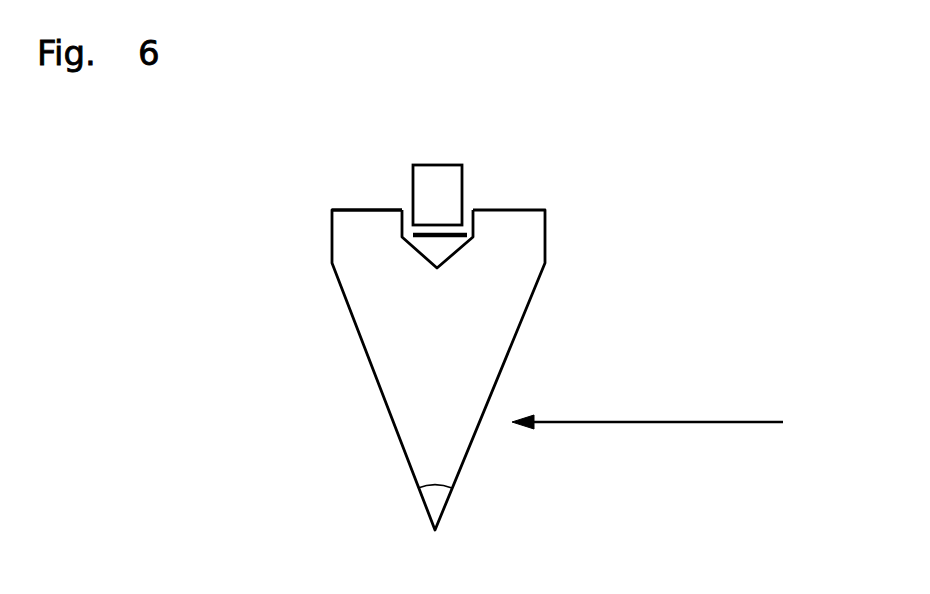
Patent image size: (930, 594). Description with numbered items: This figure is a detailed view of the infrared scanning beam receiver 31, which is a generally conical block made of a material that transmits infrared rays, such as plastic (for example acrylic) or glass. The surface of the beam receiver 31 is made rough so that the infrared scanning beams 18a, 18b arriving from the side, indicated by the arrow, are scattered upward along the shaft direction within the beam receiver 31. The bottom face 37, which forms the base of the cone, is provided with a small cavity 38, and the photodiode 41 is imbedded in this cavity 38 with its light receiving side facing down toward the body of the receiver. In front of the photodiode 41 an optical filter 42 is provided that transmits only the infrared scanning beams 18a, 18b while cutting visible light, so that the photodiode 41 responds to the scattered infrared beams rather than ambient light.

The infrared scanning beam receiver 31 is at (510, 312).
The bottom face 37 is at (370, 210).
The small cavity 38 is at (467, 247).
The photodiode 41 is at (462, 185).
The optical filter 42 is at (430, 246).
The infrared scanning beam 18a is at (653, 384).
The infrared scanning beam 18b is at (693, 422).